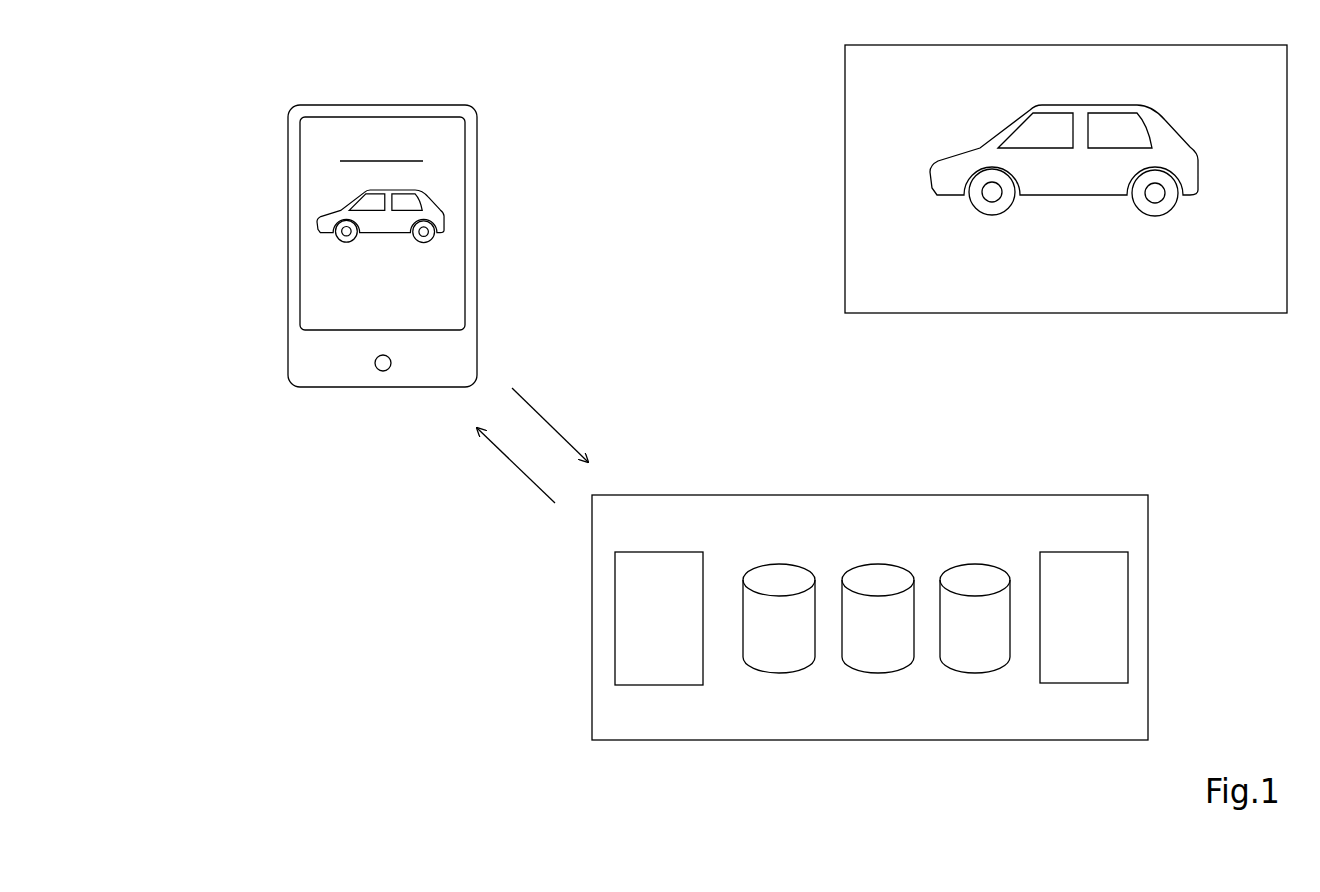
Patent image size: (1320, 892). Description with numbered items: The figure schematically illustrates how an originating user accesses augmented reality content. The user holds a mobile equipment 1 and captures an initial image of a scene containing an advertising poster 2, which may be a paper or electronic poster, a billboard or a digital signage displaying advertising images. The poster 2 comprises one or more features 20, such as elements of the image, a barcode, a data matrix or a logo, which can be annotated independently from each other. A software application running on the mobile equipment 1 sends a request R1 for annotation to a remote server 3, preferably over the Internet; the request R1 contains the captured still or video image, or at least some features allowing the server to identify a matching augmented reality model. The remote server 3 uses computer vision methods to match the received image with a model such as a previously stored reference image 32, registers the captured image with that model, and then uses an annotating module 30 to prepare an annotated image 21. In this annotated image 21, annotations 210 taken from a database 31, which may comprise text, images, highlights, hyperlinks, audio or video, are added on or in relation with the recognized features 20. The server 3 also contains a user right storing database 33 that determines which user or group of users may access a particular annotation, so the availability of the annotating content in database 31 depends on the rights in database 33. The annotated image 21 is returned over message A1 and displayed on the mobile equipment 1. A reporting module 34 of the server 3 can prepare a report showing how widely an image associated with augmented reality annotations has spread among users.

The mobile equipment 1 is at (322, 388).
The annotated image 21 is at (297, 201).
The annotations 210 is at (340, 149).
The advertising poster 2 is at (1068, 358).
The features 20 is at (952, 177).
The remote server 3 is at (668, 742).
The annotating module 30 is at (659, 618).
The database 31 is at (779, 618).
The reference image 32 is at (878, 618).
The user right storing database 33 is at (975, 618).
The reporting module 34 is at (1084, 617).
The request for annotation R1 is at (555, 425).
The message A1 is at (515, 466).